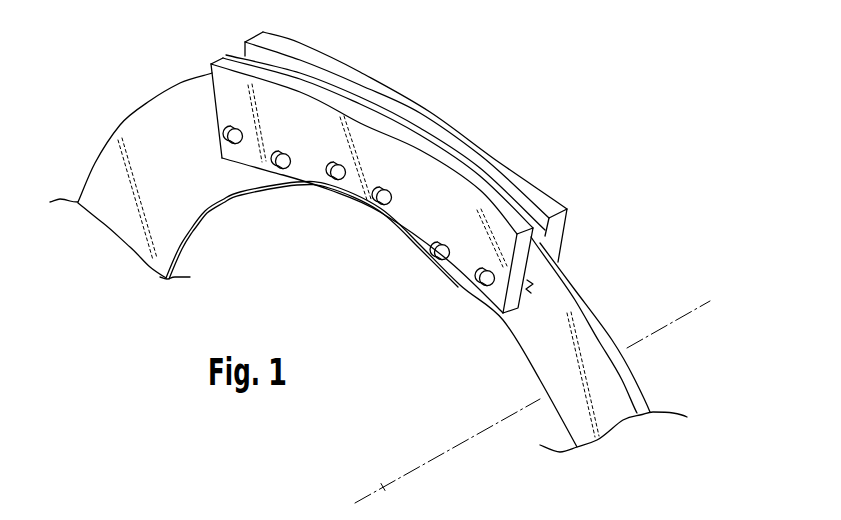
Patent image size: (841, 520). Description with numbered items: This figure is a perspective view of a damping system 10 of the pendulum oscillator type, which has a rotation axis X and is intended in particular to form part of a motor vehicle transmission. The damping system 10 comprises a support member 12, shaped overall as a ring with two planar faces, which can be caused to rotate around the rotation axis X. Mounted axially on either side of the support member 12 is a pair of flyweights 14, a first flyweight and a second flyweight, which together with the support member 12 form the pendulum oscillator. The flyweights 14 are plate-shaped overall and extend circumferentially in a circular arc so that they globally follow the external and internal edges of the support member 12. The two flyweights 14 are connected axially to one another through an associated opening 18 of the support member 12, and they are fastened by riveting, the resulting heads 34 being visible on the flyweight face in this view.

The damping system 10 is at (575, 122).
The support member 12 is at (422, 132).
The flyweight 14 is at (405, 98).
The opening 18 is at (540, 280).
The heads 34 is at (233, 137).
The rotation axis X is at (383, 487).